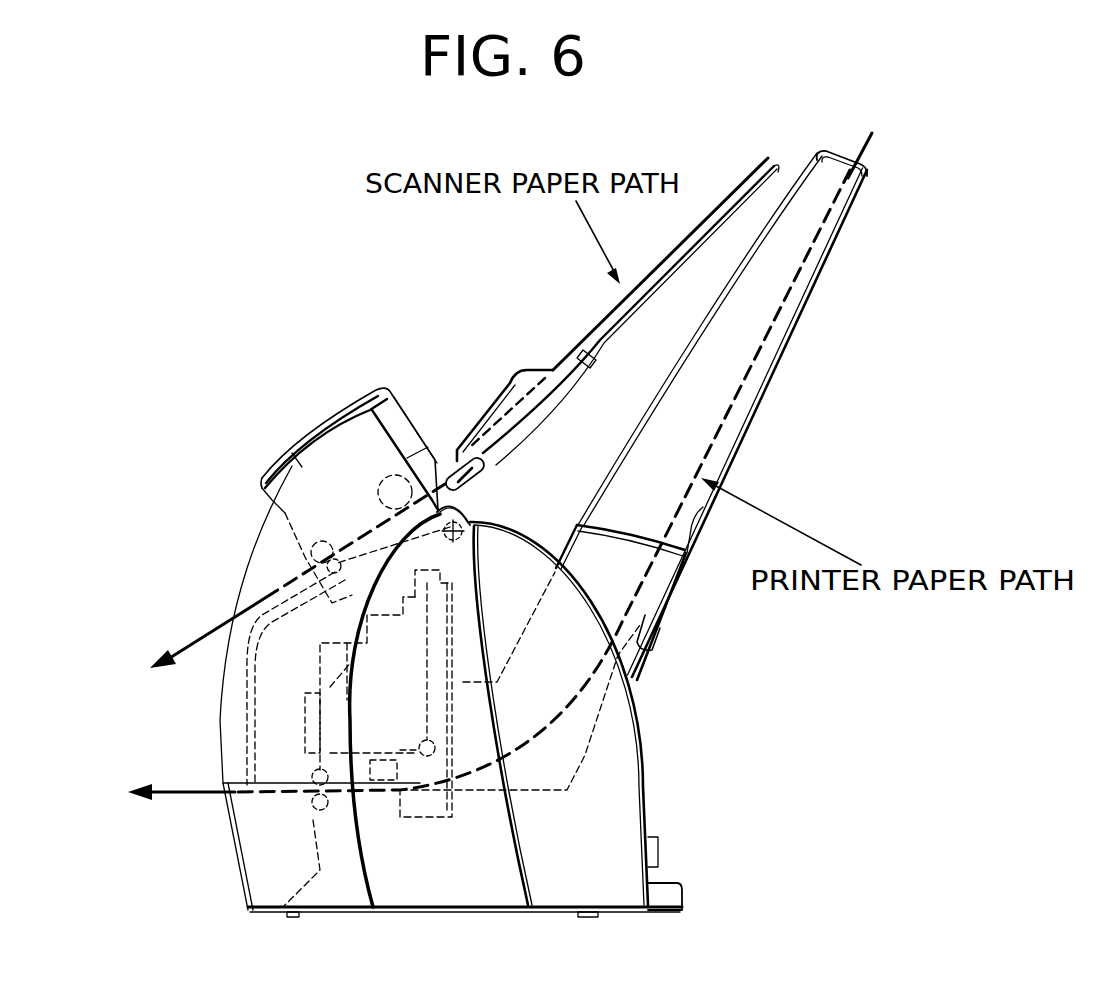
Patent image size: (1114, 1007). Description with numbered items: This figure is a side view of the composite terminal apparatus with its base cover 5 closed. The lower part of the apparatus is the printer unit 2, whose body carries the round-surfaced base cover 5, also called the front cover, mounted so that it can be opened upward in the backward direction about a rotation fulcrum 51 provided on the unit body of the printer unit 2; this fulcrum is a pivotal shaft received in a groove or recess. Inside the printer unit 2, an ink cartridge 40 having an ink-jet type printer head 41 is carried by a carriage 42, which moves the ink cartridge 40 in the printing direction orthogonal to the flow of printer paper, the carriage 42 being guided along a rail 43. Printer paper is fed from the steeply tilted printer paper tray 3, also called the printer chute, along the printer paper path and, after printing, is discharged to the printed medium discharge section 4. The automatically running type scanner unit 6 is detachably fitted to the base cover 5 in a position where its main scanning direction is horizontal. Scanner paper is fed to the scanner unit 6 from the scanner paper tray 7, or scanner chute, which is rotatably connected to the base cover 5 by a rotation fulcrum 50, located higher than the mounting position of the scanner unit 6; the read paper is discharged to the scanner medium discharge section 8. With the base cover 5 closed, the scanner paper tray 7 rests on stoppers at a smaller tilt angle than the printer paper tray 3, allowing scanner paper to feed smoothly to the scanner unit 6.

The printer unit 2 is at (617, 790).
The printer paper tray 3 is at (740, 440).
The printed medium discharge section 4 is at (222, 797).
The base cover 5 is at (220, 717).
The scanner unit 6 is at (352, 450).
The scanner paper tray 7 is at (488, 410).
The scanner medium discharge section 8 is at (273, 567).
The ink cartridge 40 is at (333, 660).
The ink-jet type printer head 41 is at (382, 783).
The carriage 42 is at (312, 727).
The rail 43 is at (450, 580).
The rotation fulcrum for the scanner paper tray 50 is at (490, 478).
The rotation fulcrum for the base cover 51 is at (477, 535).